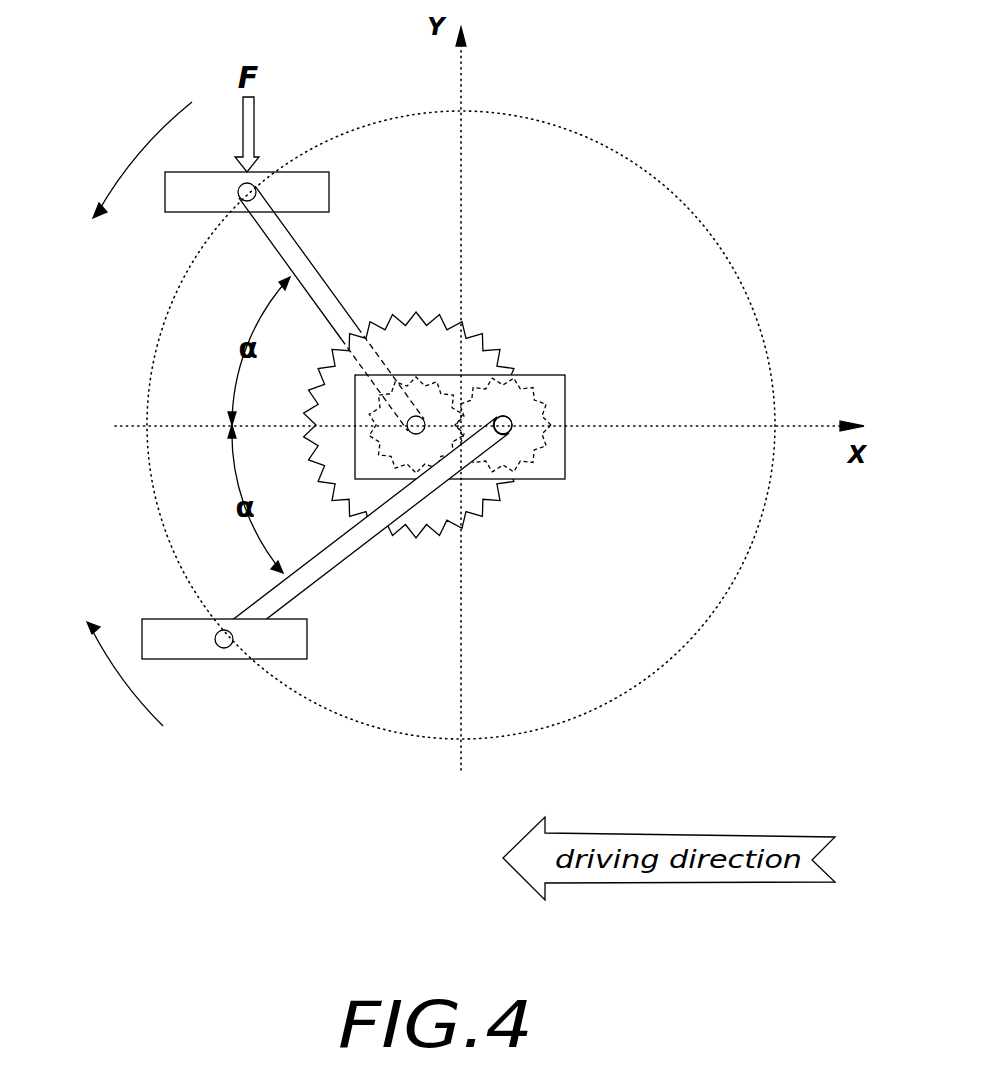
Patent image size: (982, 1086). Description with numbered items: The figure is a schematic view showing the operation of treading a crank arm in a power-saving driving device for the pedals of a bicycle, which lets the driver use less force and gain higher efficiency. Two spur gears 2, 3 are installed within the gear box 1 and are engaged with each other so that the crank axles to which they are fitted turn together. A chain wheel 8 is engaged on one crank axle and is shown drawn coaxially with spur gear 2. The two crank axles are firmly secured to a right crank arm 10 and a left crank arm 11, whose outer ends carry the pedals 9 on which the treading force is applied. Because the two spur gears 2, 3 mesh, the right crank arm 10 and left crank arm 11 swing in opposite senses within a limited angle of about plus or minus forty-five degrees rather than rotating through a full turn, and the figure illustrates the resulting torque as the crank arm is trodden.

The gear box 1 is at (555, 470).
The spur gear 2 is at (447, 390).
The spur gear 3 is at (535, 452).
The chain wheel 8 is at (415, 338).
The pedal 9 is at (270, 172).
The right crank arm 10 is at (313, 258).
The left crank arm 11 is at (423, 490).